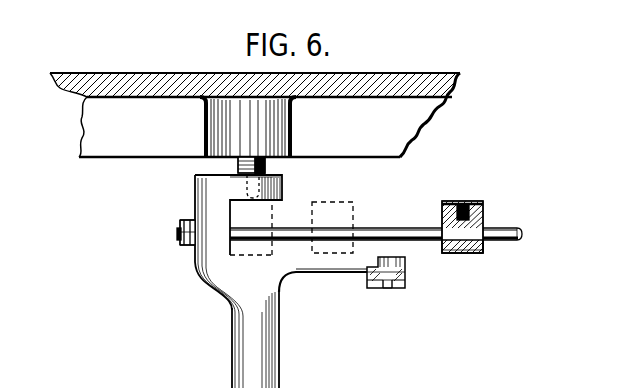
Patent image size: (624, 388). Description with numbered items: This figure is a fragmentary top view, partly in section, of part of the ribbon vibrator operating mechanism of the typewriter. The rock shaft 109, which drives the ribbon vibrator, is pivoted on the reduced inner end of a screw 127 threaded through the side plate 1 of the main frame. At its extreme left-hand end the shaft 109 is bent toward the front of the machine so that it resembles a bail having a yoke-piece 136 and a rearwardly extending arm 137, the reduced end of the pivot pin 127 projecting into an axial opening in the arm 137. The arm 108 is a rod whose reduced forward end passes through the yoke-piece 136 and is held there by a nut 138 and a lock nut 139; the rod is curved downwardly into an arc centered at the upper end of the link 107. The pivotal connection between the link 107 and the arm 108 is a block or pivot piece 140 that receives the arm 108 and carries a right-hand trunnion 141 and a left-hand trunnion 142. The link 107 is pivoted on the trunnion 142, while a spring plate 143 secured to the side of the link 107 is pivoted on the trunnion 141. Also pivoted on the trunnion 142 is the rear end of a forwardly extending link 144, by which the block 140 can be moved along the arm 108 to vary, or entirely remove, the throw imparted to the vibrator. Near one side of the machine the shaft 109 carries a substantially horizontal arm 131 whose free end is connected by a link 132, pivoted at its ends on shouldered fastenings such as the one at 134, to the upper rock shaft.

The side plate 1 is at (412, 73).
The screw 127 is at (265, 168).
The yoke-piece 136 is at (222, 210).
The rearwardly extending arm 137 is at (282, 190).
The nut 138 is at (192, 247).
The lock nut 139 is at (180, 240).
The link 107 is at (483, 215).
The arm 108 is at (515, 229).
The forwardly extending link 144 is at (442, 209).
The trunnion 142 is at (468, 203).
The trunnion 141 is at (464, 254).
The spring plate 143 is at (478, 254).
The block or pivot piece 140 is at (484, 246).
The substantially horizontal arm 131 is at (335, 273).
The link 132 is at (405, 269).
The clip notch 134 is at (392, 288).
The rock shaft 109 is at (279, 358).